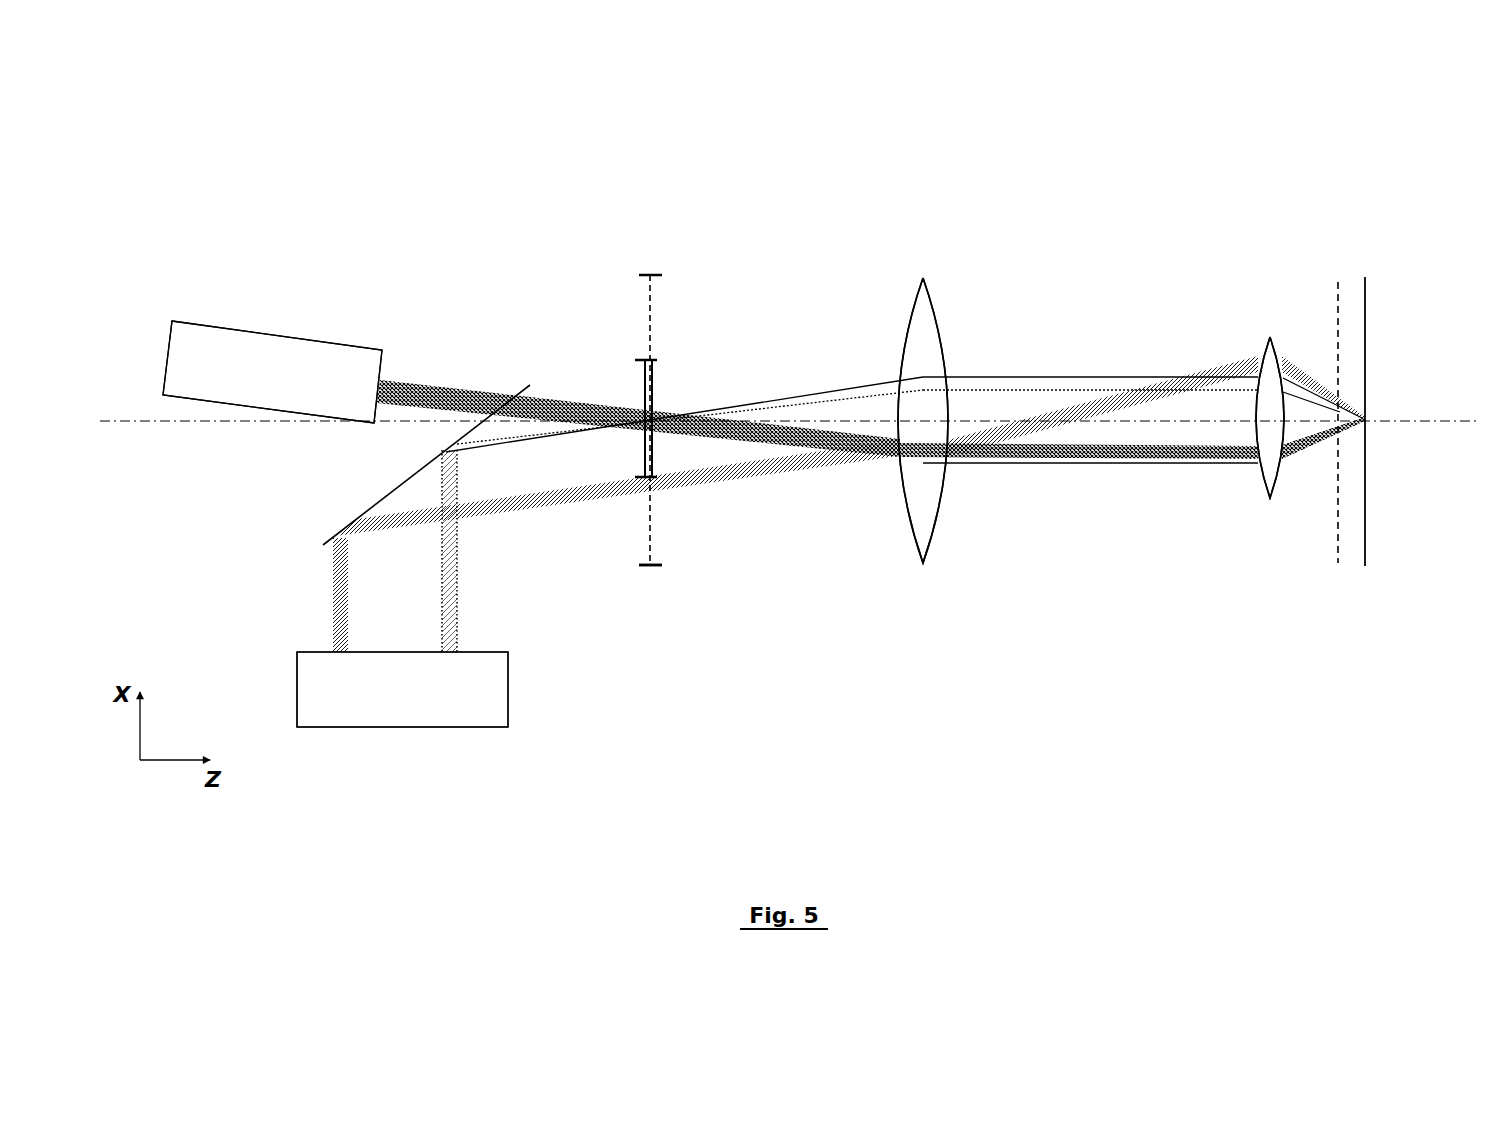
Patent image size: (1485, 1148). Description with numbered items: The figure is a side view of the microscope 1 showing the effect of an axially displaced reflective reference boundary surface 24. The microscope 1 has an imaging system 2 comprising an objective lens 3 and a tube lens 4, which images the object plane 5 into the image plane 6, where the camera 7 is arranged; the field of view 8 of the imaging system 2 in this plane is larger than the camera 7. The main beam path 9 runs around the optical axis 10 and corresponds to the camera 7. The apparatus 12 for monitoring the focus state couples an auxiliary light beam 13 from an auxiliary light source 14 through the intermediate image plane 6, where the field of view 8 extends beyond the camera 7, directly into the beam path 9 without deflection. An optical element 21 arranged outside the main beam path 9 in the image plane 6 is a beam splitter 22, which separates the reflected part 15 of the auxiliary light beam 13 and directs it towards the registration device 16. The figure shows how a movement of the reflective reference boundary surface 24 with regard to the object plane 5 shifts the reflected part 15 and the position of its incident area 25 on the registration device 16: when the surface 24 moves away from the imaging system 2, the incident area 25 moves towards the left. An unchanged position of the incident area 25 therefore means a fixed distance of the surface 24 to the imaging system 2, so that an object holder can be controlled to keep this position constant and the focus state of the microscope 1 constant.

The microscope 1 is at (1098, 168).
The imaging system 2 is at (938, 266).
The objective lens 3 is at (1272, 336).
The tube lens 4 is at (921, 277).
The object plane 5 is at (520, 508).
The image plane 6 is at (650, 577).
The camera 7 is at (638, 382).
The field of view 8 is at (643, 527).
The main beam path 9 is at (1075, 472).
The optical axis 10 is at (178, 423).
The apparatus for monitoring the focus state 12 is at (243, 318).
The auxiliary light beam 13 is at (467, 383).
The auxiliary light source 14 is at (295, 360).
The reflected part of the auxiliary light beam 15 is at (334, 563).
The registration device 16 is at (423, 705).
The optical element 21 is at (370, 465).
The beam splitter 22 is at (370, 503).
The reflective reference boundary surface 24 is at (1366, 577).
The incident area 25 is at (325, 643).